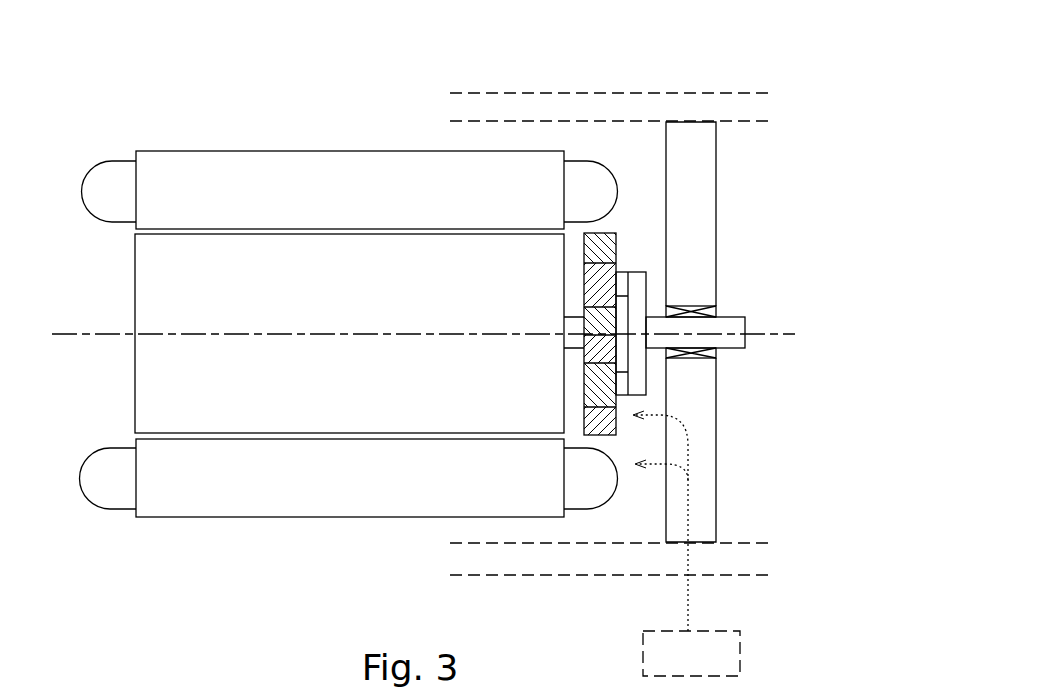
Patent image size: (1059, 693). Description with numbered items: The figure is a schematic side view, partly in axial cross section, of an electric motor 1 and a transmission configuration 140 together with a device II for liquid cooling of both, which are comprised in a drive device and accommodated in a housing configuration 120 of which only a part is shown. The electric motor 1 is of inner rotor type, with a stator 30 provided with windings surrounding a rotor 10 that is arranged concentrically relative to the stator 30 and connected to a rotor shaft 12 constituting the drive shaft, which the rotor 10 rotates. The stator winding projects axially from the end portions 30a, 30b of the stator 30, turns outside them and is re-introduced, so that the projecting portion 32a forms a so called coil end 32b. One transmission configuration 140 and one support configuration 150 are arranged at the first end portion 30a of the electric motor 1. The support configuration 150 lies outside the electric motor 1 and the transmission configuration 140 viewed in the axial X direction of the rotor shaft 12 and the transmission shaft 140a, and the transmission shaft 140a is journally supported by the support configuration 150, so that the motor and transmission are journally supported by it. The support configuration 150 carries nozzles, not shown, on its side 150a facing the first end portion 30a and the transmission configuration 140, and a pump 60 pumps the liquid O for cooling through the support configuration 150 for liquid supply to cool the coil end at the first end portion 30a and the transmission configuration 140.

The electric motor 1 is at (366, 314).
The rotor 10 is at (313, 270).
The rotor shaft 12 is at (577, 348).
The stator 30 is at (366, 314).
The first end portion 30a is at (565, 153).
The end portion 30b is at (134, 155).
The projecting portion 32a is at (604, 167).
The coil end 32b is at (120, 510).
The pump 60 is at (691, 653).
The housing configuration 120 is at (692, 93).
The transmission configuration 140 is at (618, 262).
The transmission shaft 140a is at (728, 313).
The support configuration 150 is at (722, 482).
The side of the support configuration 150a is at (666, 493).
The liquid O is at (688, 592).
The axial direction X is at (98, 334).
The device for liquid cooling II is at (272, 68).